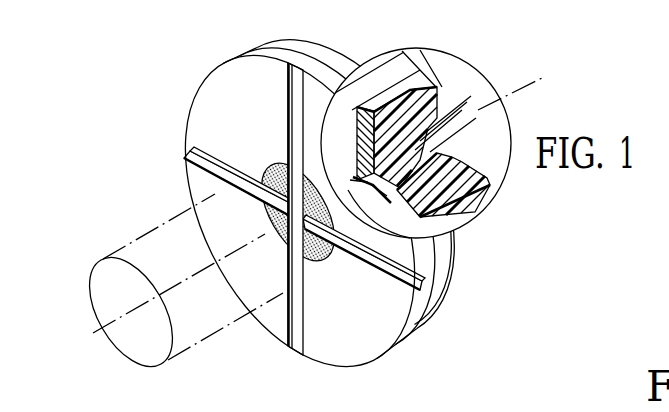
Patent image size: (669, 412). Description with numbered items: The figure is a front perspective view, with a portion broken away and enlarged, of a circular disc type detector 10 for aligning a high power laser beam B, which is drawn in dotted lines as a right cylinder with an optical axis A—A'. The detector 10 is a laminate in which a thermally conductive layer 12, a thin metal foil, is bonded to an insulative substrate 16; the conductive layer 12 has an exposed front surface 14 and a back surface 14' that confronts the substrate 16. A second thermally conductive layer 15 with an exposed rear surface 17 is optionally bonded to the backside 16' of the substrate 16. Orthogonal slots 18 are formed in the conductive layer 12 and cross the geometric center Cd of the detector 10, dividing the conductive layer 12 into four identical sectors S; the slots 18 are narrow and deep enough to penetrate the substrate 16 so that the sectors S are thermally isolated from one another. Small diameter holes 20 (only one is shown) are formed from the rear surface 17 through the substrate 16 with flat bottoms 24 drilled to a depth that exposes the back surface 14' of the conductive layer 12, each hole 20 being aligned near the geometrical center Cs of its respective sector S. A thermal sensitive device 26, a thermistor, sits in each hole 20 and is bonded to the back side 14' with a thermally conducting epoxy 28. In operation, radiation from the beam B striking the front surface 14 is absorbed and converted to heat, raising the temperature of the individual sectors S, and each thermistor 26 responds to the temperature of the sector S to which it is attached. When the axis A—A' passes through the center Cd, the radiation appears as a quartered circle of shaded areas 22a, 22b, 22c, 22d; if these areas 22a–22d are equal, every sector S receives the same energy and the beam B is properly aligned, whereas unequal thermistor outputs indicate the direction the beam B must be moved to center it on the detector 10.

The circular disc type detector 10 is at (137, 60).
The thermally conductive layer 12 is at (270, 62).
The front surface 14 is at (320, 222).
The back surface 14' is at (373, 196).
The second thermally conductive layer 15 is at (317, 43).
The insulative substrate 16 is at (355, 166).
The backside of the substrate 16' is at (472, 240).
The exposed rear surface 17 is at (345, 50).
The orthogonal slots 18 is at (185, 158).
The holes 20 is at (436, 106).
The shaded area 22a is at (308, 143).
The shaded area 22b is at (322, 266).
The shaded area 22c is at (281, 250).
The shaded area 22d is at (290, 165).
The flat bottoms 24 is at (392, 197).
The thermal sensitive devices 26 is at (427, 141).
The thermally conducting epoxy 28 is at (387, 96).
The optical axis end A is at (179, 277).
The optical axis end A' is at (520, 86).
The laser beam B is at (197, 352).
The sectors S is at (193, 118).
The geometrical center of sector Cs is at (249, 121).
The geometric center of the detector Cd is at (284, 208).